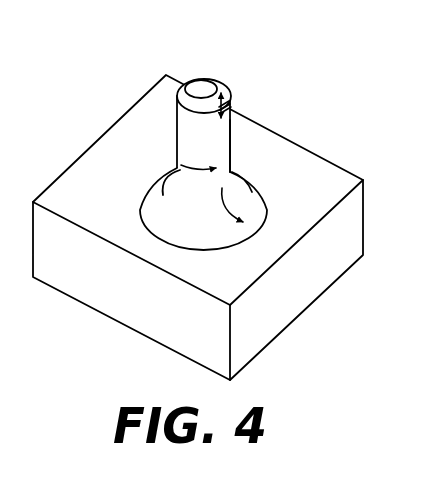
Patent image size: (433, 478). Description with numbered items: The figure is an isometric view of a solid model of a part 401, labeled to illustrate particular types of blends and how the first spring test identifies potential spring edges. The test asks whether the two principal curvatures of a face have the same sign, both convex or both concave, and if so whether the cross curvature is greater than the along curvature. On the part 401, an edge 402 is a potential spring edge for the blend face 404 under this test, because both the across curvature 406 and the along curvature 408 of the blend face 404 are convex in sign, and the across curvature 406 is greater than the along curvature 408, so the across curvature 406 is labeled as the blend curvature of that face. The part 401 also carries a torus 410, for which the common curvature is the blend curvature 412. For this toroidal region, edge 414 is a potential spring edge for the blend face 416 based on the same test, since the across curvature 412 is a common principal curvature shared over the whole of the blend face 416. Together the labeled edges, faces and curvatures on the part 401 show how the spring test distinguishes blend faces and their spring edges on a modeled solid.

The part 401 is at (300, 116).
The edge 402 is at (177, 99).
The blend face 404 is at (177, 93).
The across curvature 406 is at (231, 108).
The along curvature 408 is at (225, 102).
The torus 410 is at (203, 147).
The blend curvature 412 is at (223, 193).
The edge 414 is at (231, 155).
The blend face 416 is at (243, 180).